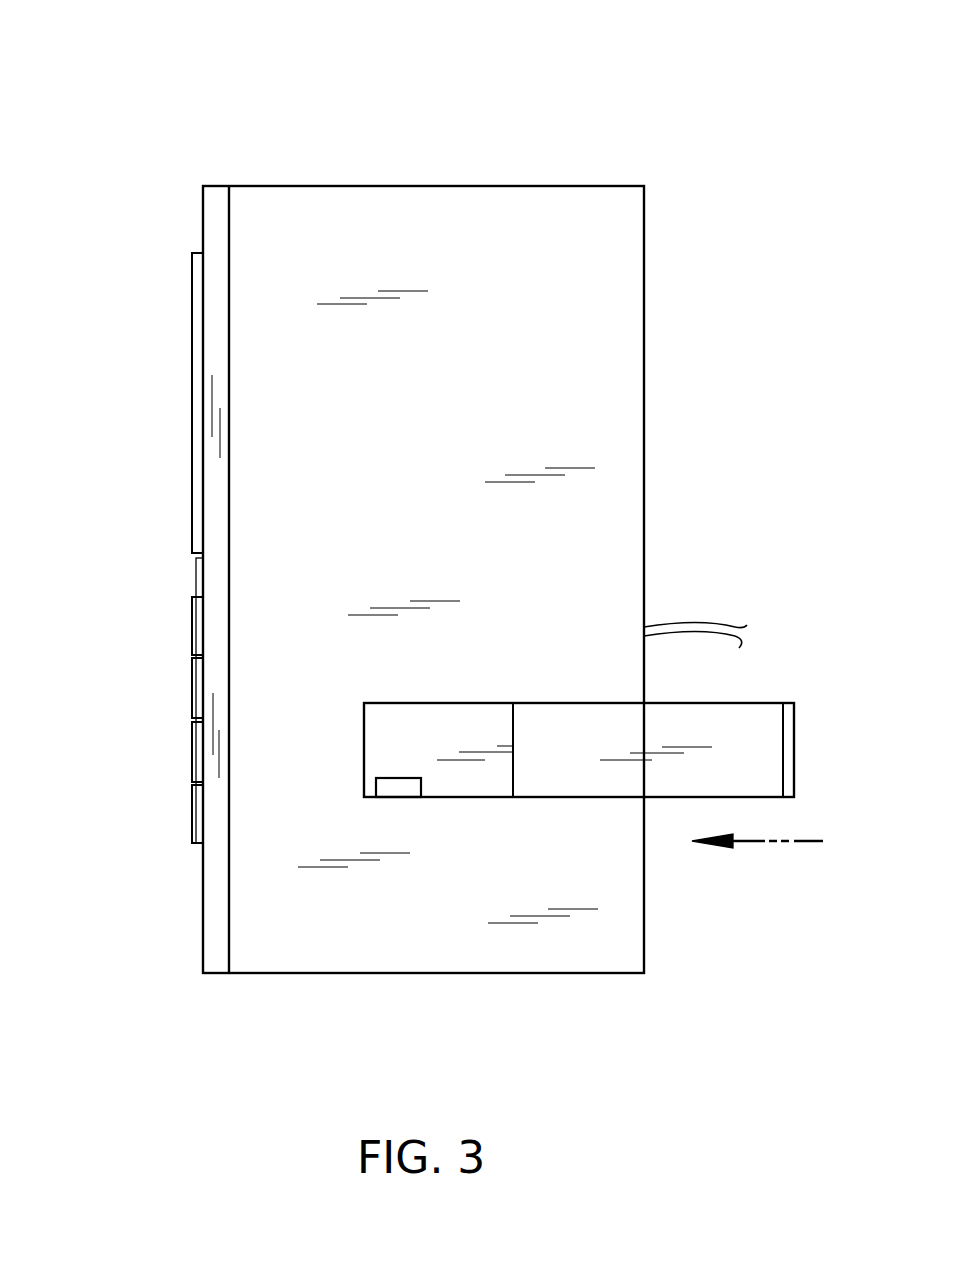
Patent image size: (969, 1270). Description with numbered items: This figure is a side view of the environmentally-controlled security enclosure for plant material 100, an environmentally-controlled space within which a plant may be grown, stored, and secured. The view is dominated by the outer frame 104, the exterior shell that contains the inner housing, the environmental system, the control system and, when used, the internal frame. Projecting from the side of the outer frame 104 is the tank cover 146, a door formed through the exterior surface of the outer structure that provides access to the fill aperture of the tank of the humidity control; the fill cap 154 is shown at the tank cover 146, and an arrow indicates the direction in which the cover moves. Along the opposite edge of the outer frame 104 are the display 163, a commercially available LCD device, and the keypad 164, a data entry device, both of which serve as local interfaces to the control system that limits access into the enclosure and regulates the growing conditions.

The environmentally-controlled security enclosure for plant material 100 is at (146, 82).
The outer frame 104 is at (500, 222).
The tank cover 146 is at (740, 720).
The fill cap 154 is at (406, 778).
The display 163 is at (193, 458).
The keypad 164 is at (195, 688).